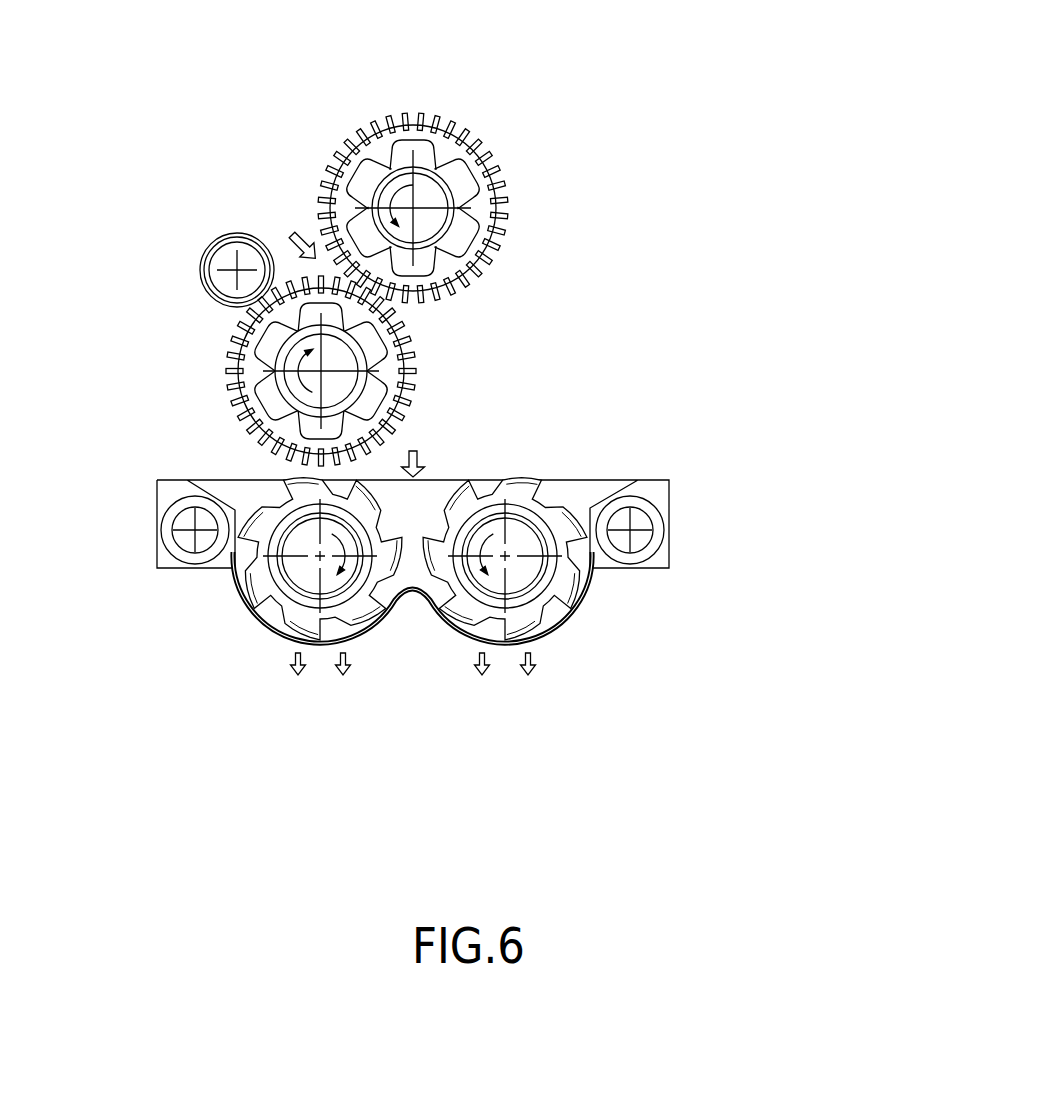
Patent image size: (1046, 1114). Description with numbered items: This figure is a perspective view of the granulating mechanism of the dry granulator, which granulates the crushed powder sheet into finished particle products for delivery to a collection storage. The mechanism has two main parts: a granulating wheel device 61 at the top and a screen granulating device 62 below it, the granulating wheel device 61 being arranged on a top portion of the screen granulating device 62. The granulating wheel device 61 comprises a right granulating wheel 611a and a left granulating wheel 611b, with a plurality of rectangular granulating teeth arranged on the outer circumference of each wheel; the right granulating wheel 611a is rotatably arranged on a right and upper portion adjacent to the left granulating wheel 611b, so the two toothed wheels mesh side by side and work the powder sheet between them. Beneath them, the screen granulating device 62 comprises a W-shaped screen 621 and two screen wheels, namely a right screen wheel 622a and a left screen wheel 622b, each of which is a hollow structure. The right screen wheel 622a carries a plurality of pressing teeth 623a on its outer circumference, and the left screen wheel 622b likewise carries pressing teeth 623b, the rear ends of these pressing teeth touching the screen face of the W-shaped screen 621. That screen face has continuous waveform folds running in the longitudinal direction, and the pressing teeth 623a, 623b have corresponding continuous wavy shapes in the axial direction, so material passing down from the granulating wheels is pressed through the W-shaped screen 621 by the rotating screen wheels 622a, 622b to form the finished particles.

The granulating wheel device 61 is at (412, 246).
The right granulating wheel 611a is at (481, 184).
The left granulating wheel 611b is at (226, 373).
The screen granulating device 62 is at (508, 535).
The W-shaped screen 621 is at (558, 628).
The right screen wheel 622a is at (603, 486).
The left screen wheel 622b is at (424, 622).
The pressing teeth 623a is at (518, 475).
The pressing teeth 623b is at (363, 633).